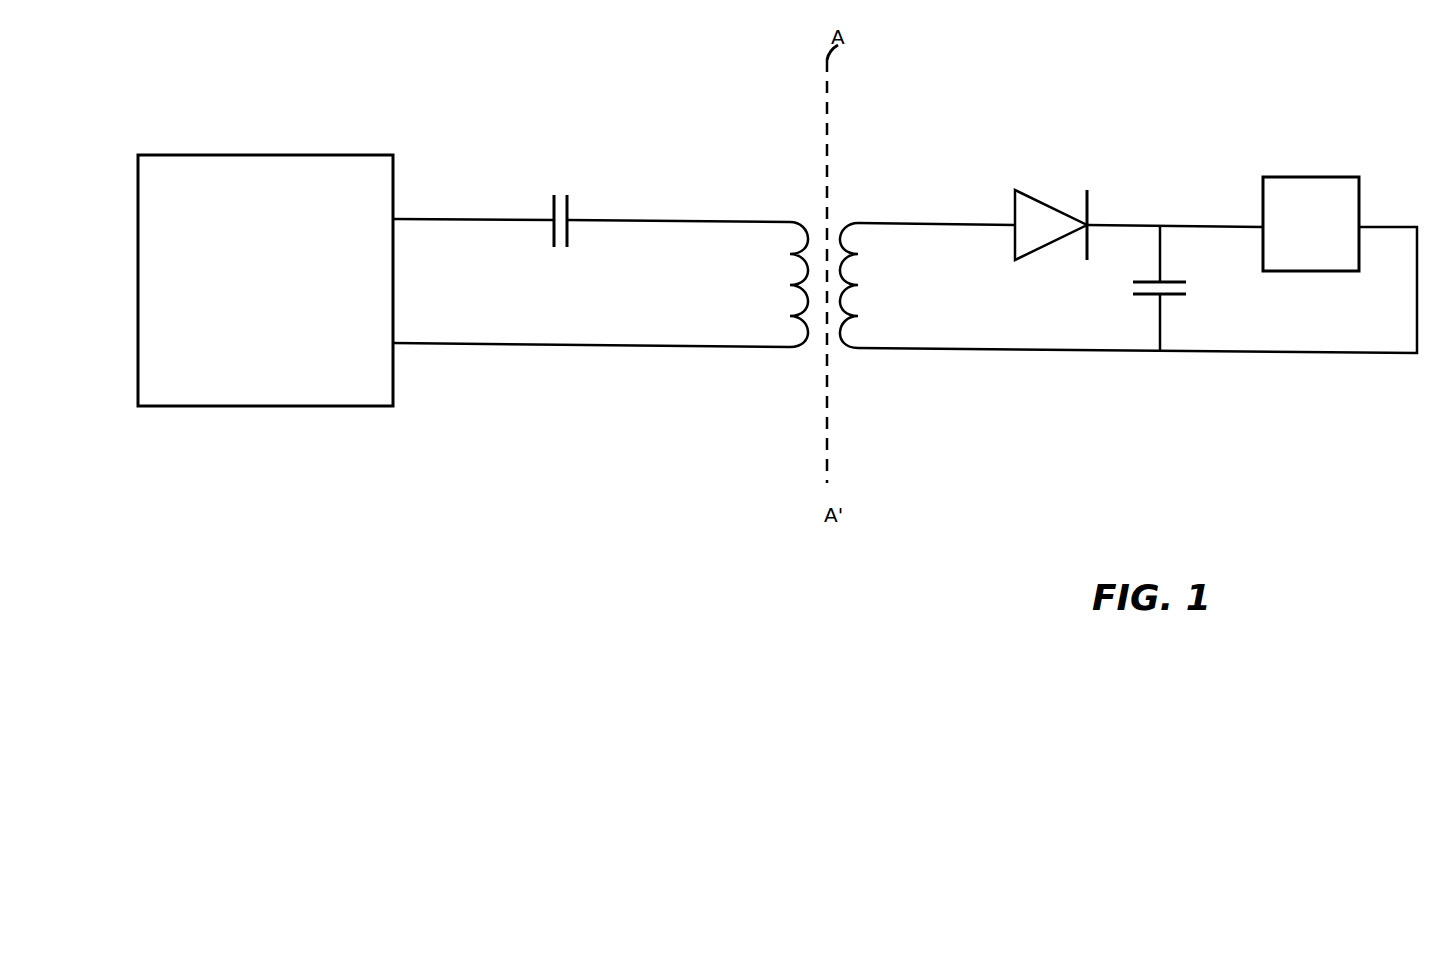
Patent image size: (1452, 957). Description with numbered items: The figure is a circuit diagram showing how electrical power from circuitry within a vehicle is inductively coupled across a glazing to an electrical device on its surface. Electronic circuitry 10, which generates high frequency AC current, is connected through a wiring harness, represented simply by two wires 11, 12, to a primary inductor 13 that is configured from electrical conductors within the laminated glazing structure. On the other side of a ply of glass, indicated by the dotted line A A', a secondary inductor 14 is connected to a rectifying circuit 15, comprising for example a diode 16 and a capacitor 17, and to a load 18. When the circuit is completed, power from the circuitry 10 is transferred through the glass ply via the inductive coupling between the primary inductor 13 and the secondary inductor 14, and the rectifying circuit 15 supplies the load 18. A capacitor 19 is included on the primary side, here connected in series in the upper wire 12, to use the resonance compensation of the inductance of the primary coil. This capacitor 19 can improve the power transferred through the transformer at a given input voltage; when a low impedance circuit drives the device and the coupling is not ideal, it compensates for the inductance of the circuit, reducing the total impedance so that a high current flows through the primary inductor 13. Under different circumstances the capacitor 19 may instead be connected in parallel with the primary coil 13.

The electronic circuitry 10 is at (245, 388).
The wire 11 is at (525, 348).
The wire 12 is at (485, 220).
The primary inductor 13 is at (792, 347).
The secondary inductor 14 is at (858, 222).
The rectifying circuit 15 is at (1082, 362).
The diode 16 is at (1045, 200).
The capacitor 17 is at (1163, 352).
The load 18 is at (1357, 180).
The capacitor 19 is at (578, 197).